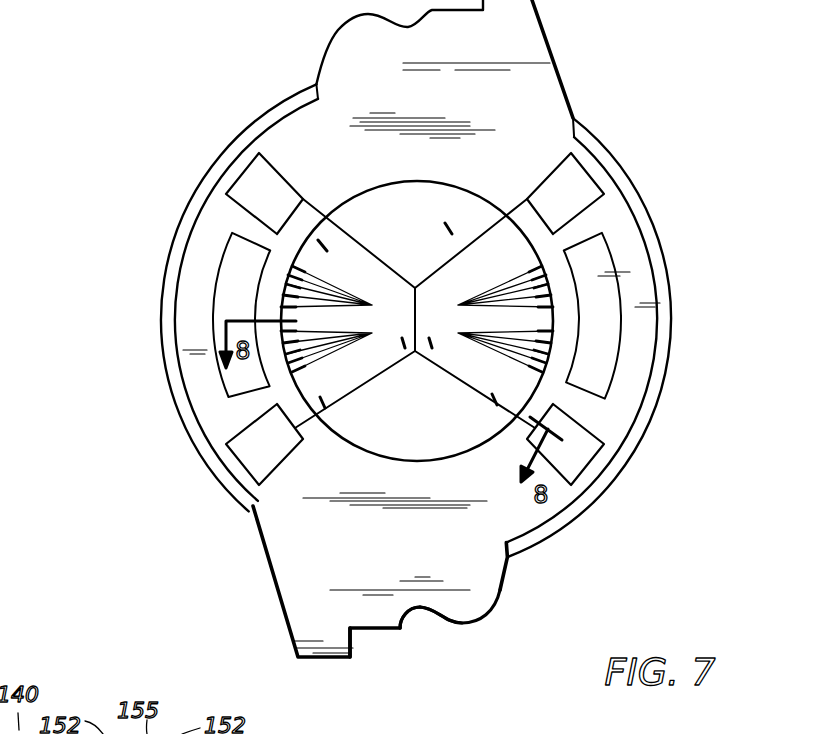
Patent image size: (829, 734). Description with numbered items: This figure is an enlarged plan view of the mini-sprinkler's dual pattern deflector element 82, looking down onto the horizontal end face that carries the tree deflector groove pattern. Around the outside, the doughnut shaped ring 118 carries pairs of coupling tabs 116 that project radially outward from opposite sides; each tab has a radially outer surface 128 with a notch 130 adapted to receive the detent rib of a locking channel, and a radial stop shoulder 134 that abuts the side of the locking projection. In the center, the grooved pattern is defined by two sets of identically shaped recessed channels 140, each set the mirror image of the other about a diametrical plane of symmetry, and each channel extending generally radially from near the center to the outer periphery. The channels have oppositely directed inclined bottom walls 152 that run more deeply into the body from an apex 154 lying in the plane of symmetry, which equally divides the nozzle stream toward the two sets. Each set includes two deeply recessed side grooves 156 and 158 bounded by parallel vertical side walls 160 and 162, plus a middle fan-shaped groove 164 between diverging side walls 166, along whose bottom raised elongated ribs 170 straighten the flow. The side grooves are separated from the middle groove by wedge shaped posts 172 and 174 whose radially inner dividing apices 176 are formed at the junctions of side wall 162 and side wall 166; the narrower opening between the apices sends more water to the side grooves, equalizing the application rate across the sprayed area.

The dual pattern deflector element 82 is at (200, 120).
The coupling tabs 116 is at (293, 563).
The doughnut shaped rings 118 is at (523, 530).
The radially outer surface 128 is at (384, 630).
The notch 130 is at (424, 612).
The radial stop shoulder 134 is at (360, 650).
The recessed channels 140 is at (417, 321).
The inclined bottom walls 152 is at (388, 292).
The apex 154 is at (417, 319).
The side groove 156 is at (316, 225).
The side groove 158 is at (514, 225).
The side wall 160 is at (341, 238).
The side wall 162 is at (222, 197).
The middle fan-shaped groove 164 is at (300, 296).
The side walls 166 is at (296, 252).
The raised elongated ribs 170 is at (298, 277).
The wedge shaped post 172 is at (255, 221).
The wedge shaped post 174 is at (276, 408).
The dividing apices 176 is at (478, 292).